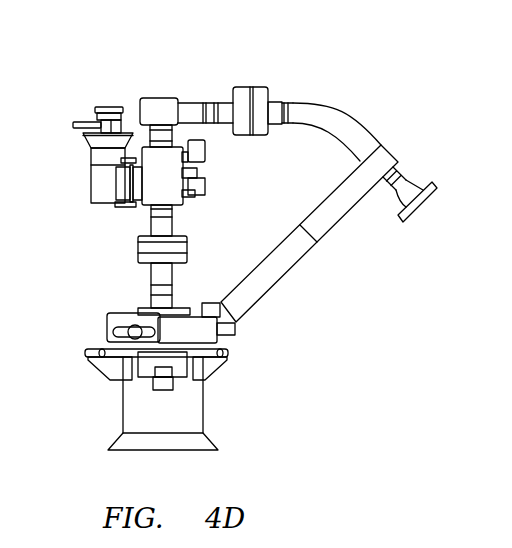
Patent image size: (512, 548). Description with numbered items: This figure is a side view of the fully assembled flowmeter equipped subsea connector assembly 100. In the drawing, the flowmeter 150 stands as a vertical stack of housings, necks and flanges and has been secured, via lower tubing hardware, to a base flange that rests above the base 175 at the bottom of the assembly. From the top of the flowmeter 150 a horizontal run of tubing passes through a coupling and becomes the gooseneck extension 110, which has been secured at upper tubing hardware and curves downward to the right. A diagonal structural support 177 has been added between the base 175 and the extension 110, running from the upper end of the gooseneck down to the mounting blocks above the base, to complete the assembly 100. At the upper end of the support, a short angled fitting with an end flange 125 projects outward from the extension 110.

The flowmeter equipped subsea connector assembly 100 is at (346, 55).
The gooseneck extension 110 is at (323, 115).
The nozzle / distal tip 125 is at (408, 186).
The flowmeter 150 is at (131, 74).
The base 175 is at (203, 443).
The structural support 177 is at (292, 253).